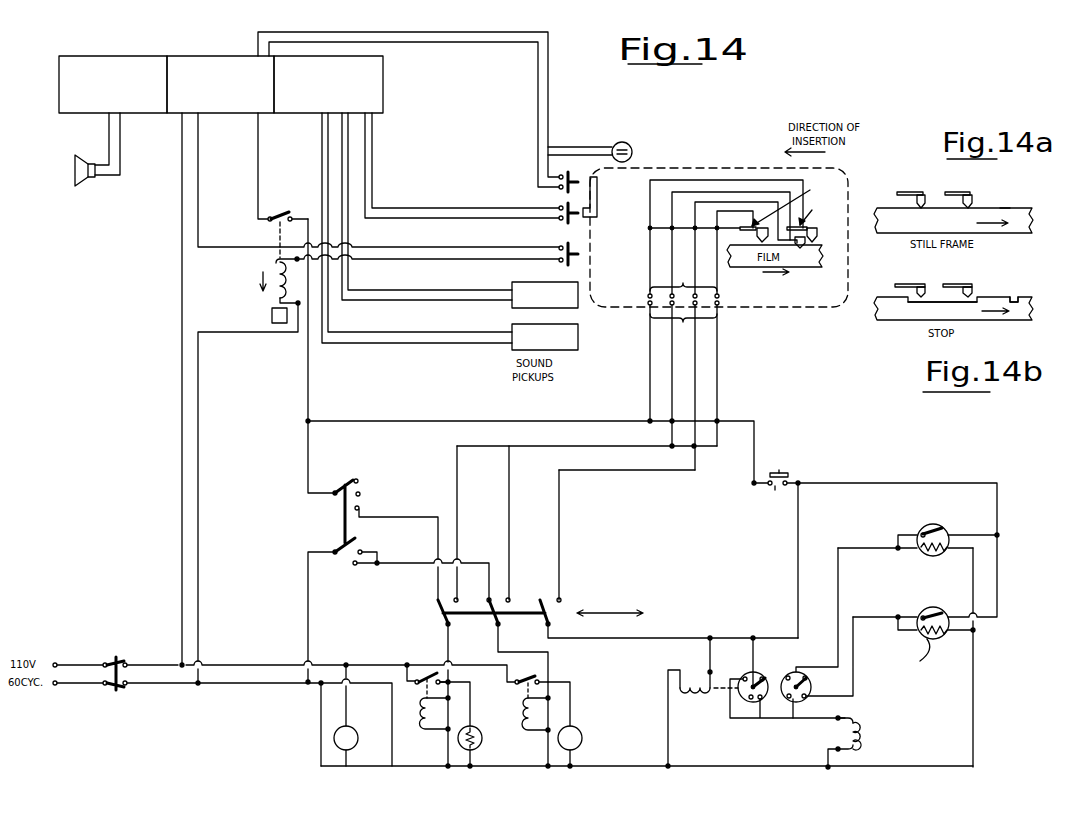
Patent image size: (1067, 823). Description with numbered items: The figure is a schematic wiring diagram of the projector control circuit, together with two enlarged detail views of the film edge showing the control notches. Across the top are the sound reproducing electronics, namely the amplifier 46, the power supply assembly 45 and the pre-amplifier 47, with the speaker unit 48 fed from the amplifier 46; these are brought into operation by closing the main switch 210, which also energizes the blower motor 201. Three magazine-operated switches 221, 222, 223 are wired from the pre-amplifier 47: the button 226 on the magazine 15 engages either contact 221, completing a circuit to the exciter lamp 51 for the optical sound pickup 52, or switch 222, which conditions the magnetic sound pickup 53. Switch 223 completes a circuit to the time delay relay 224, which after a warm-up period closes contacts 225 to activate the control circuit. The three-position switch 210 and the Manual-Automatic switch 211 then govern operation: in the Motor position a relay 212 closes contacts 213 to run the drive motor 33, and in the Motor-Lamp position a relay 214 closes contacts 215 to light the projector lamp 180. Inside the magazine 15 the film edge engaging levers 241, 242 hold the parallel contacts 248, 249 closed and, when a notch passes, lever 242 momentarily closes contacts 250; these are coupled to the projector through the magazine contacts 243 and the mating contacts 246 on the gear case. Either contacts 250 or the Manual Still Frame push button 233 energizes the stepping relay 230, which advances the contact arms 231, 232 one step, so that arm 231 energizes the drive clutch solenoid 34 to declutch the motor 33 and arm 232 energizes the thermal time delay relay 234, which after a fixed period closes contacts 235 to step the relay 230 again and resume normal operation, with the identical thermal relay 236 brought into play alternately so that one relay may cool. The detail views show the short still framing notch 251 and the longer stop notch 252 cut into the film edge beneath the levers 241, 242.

In FIG. 14, the amplifier 46 is at (60, 108).
In FIG. 14, the power supply assembly 45 is at (230, 113).
In FIG. 14, the pre-amplifier 47 is at (383, 101).
In FIG. 14, the speaker unit 48 is at (73, 178).
In FIG. 14, the exciter lamp assembly 51 is at (632, 152).
In FIG. 14, the switch 221 is at (556, 182).
In FIG. 14, the switch 222 is at (560, 220).
In FIG. 14, the switch 223 is at (558, 262).
In FIG. 14, the contacts 225 is at (284, 211).
In FIG. 14, the relay 224 is at (268, 298).
In FIG. 14, the button 226 is at (597, 217).
In FIG. 14, the magazine 15 is at (771, 309).
In FIG. 14, the film edge engaging lever 241 is at (754, 231).
In FIG. 14A, the film edge engaging lever 241 is at (910, 192).
In FIG. 14B, the film edge engaging lever 241 is at (918, 285).
In FIG. 14, the film edge engaging lever 242 is at (813, 228).
In FIG. 14A, the film edge engaging lever 242 is at (958, 192).
In FIG. 14B, the film edge engaging lever 242 is at (960, 285).
In FIG. 14, the contacts 248 is at (793, 203).
In FIG. 14, the contacts 249 is at (819, 213).
In FIG. 14, the contacts 250 is at (798, 248).
In FIG. 14, the electrical contacts 243 is at (683, 278).
In FIG. 14, the electrical contacts 246 is at (683, 327).
In FIG. 14, the magnetic sound track pickup 53 is at (520, 306).
In FIG. 14, the photocell optical sound pickup 52 is at (578, 345).
In FIG. 14, the switch 210 is at (335, 515).
In FIG. 14, the Manual-Automatic switch 211 is at (523, 611).
In FIG. 14, the motor 201 is at (334, 731).
In FIG. 14, the contacts 215 is at (432, 667).
In FIG. 14, the relay 214 is at (417, 715).
In FIG. 14, the projector lamp 180 is at (477, 750).
In FIG. 14, the contacts 213 is at (540, 677).
In FIG. 14, the relay 212 is at (540, 710).
In FIG. 14, the drive motor 33 is at (578, 728).
In FIG. 14, the stepping relay 230 is at (695, 700).
In FIG. 14, the contact arm 231 is at (762, 676).
In FIG. 14, the contact arm 232 is at (812, 687).
In FIG. 14, the drive clutch solenoid 34 is at (861, 746).
In FIG. 14, the Manual Still Frame push button 233 is at (773, 488).
In FIG. 14, the thermal relay 236 is at (942, 525).
In FIG. 14, the contacts 235 is at (937, 610).
In FIG. 14, the time delay relay 234 is at (924, 656).
In FIG. 14A, the still framing notch 251 is at (1001, 208).
In FIG. 14B, the still framing notch 251 is at (1028, 284).
In FIG. 14B, the stop notch 252 is at (960, 297).